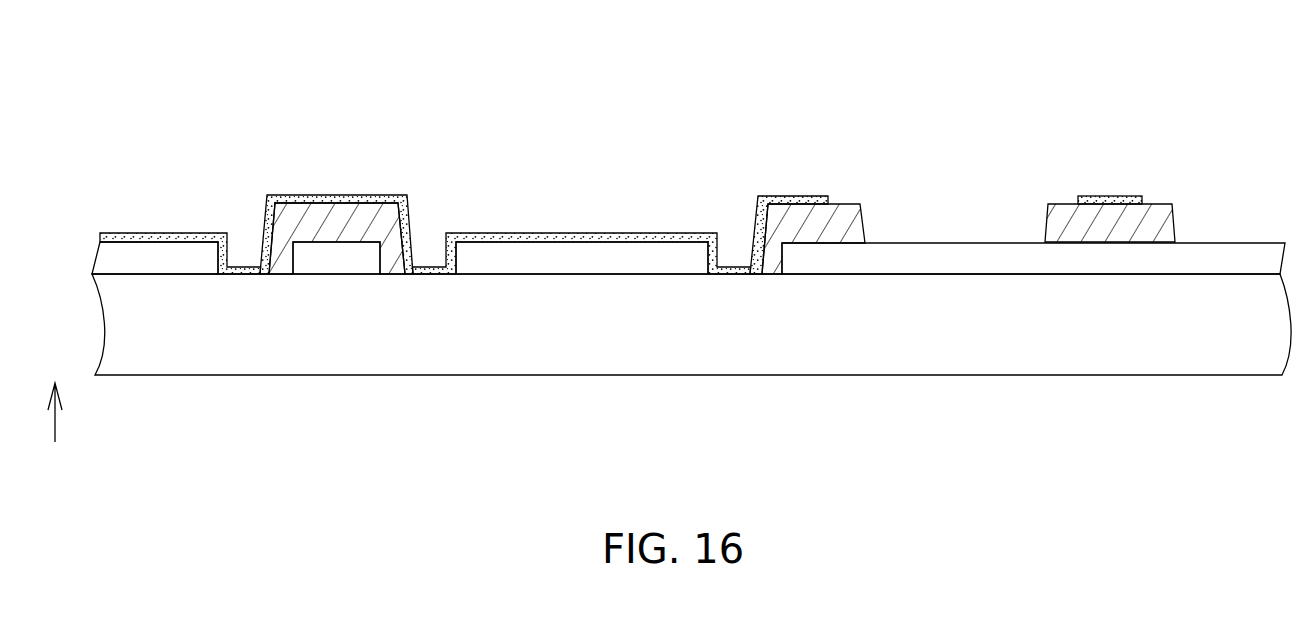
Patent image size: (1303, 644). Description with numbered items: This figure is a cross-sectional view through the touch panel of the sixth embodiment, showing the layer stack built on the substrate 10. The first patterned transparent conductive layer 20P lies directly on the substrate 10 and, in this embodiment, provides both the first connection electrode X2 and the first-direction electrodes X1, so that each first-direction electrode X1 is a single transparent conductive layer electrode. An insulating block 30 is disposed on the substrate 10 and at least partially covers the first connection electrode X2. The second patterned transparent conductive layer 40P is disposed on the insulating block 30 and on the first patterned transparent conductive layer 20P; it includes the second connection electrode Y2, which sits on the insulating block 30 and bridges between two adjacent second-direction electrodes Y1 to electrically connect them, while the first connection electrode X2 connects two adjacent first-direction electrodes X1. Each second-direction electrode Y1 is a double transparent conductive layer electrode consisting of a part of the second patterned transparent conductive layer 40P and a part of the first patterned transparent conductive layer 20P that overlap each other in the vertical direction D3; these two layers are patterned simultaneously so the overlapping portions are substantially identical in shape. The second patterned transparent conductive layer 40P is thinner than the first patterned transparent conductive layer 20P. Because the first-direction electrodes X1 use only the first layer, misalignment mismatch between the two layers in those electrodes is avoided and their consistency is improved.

The substrate 10 is at (666, 357).
The first patterned transparent conductive layer 20P is at (688, 229).
The second patterned transparent conductive layer 40P is at (612, 179).
The insulating block 30 is at (388, 231).
The first-direction electrode X1 is at (960, 242).
The first connection electrode X2 is at (737, 179).
The second-direction electrode Y1 is at (260, 114).
The second connection electrode Y2 is at (318, 196).
The vertical direction D3 is at (59, 397).